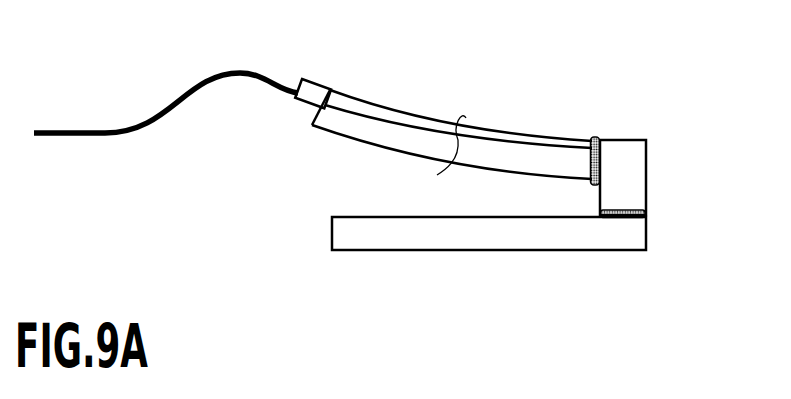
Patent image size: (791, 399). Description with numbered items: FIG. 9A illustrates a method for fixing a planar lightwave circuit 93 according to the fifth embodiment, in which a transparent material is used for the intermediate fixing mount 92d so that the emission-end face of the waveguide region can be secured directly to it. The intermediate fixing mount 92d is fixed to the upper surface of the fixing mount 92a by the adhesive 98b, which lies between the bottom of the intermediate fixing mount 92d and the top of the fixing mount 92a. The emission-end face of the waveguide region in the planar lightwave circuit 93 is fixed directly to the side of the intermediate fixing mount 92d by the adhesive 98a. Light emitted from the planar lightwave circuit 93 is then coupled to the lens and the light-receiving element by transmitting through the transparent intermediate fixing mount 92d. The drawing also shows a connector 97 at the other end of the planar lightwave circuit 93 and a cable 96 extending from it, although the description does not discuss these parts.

The cable 96 is at (99, 131).
The connector 97 is at (318, 80).
The planar lightwave circuit 93 is at (457, 107).
The adhesive 98a is at (595, 137).
The adhesive 98b is at (647, 215).
The intermediate fixing mount 92d is at (637, 168).
The fixing mount 92a is at (347, 232).